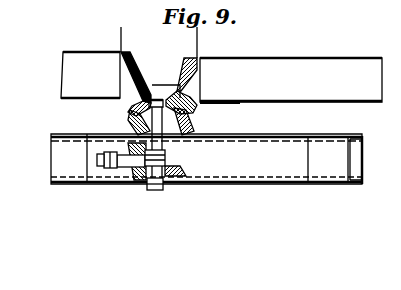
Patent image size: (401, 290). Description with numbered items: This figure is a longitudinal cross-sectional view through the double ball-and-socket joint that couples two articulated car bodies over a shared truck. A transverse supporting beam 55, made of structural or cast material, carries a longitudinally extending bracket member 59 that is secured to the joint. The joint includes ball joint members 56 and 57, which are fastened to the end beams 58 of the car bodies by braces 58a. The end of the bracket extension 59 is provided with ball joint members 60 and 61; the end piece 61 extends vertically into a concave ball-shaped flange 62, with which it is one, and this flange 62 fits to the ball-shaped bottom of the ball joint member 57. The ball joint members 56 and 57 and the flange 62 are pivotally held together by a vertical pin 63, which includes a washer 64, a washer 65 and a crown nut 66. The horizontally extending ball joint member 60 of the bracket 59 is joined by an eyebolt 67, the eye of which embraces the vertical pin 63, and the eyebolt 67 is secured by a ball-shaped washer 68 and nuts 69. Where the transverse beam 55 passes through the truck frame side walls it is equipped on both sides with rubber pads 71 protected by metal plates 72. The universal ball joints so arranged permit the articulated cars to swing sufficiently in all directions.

The transverse supporting beam 55 is at (332, 172).
The ball joint member 56 is at (134, 64).
The ball joint member 57 is at (158, 86).
The end beam 58 is at (221, 70).
The brace 58a is at (303, 78).
The bracket member 59 is at (223, 185).
The ball joint member 60 is at (135, 176).
The ball joint member 61 is at (144, 184).
The concave ball-shaped flange 62 is at (196, 117).
The vertical pin 63 is at (197, 143).
The washer 64 is at (158, 88).
The washer 65 is at (182, 181).
The crown nut 66 is at (167, 183).
The eyebolt 67 is at (118, 168).
The ball-shaped washer 68 is at (108, 168).
The nut 69 is at (100, 168).
The rubber pad 71 is at (358, 171).
The metal plate 72 is at (363, 160).